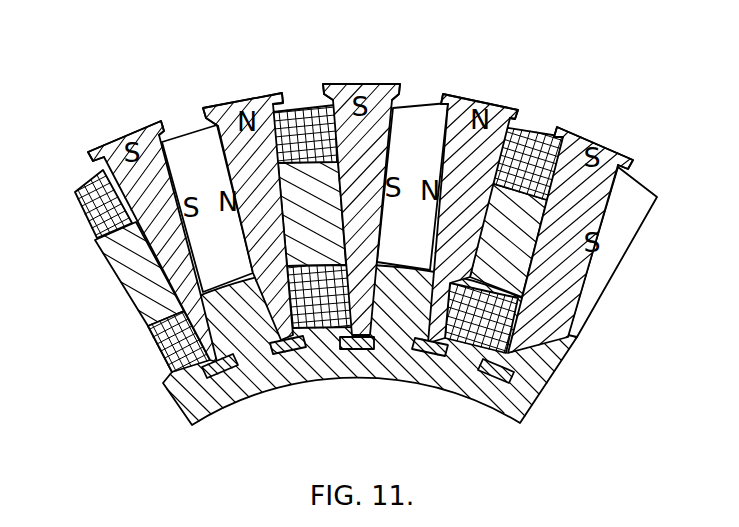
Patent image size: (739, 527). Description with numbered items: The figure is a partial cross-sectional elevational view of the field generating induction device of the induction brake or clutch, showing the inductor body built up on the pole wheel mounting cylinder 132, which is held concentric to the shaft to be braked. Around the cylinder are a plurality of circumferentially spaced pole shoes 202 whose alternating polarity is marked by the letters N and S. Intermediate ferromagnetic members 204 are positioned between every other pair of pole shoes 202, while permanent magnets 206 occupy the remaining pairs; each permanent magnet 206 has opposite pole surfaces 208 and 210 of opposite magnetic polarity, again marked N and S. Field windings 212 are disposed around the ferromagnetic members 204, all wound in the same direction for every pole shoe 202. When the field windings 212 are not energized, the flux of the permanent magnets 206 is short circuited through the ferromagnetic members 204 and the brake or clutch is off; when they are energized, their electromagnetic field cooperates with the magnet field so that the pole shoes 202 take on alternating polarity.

The pole wheel mounting cylinder 132 is at (193, 400).
The pole shoes 202 is at (108, 143).
The intermediate ferromagnetic members 204 is at (347, 84).
The permanent magnets 206 is at (593, 302).
The pole surface 208 is at (140, 326).
The pole surface 210 is at (118, 284).
The field windings 212 is at (300, 110).